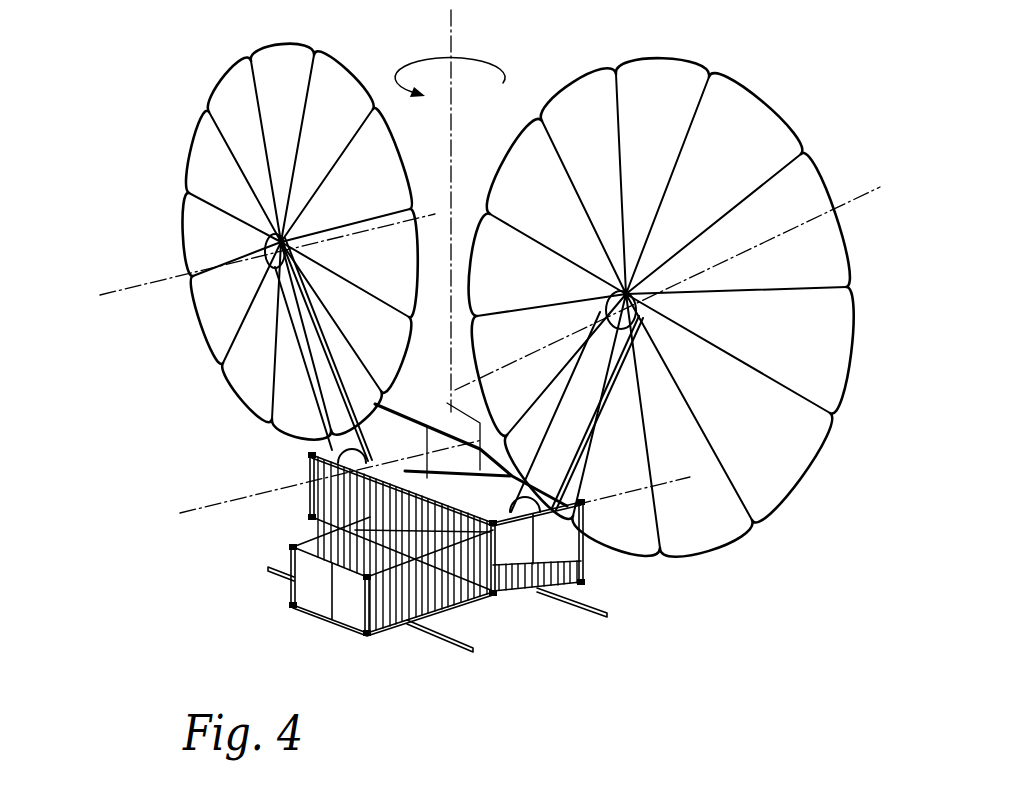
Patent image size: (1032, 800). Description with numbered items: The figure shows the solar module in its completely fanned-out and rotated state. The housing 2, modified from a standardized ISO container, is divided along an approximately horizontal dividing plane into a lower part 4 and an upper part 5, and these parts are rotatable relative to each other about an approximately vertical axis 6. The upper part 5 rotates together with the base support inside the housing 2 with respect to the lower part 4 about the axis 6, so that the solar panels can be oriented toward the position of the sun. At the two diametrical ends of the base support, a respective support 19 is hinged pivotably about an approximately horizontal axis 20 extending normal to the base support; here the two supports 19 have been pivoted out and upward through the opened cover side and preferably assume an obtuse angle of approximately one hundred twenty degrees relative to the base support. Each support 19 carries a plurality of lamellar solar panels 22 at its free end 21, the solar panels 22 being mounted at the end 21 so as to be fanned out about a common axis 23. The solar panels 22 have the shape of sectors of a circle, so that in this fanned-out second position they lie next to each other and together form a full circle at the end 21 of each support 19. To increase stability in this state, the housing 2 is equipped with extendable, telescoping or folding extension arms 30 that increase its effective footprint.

The housing 2 is at (233, 590).
The lower part 4 is at (348, 592).
The upper part 5 is at (327, 520).
The vertical axis 6 is at (455, 17).
The support 19 is at (295, 302).
The horizontal axis 20 is at (203, 505).
The free end 21 is at (272, 252).
The solar panel 22 is at (212, 175).
The common axis 23 is at (118, 288).
The extension arm 30 is at (573, 608).